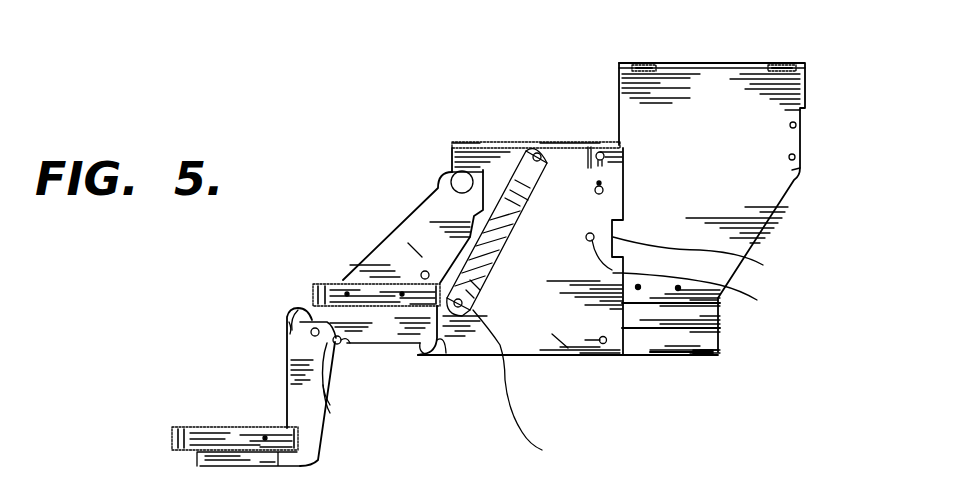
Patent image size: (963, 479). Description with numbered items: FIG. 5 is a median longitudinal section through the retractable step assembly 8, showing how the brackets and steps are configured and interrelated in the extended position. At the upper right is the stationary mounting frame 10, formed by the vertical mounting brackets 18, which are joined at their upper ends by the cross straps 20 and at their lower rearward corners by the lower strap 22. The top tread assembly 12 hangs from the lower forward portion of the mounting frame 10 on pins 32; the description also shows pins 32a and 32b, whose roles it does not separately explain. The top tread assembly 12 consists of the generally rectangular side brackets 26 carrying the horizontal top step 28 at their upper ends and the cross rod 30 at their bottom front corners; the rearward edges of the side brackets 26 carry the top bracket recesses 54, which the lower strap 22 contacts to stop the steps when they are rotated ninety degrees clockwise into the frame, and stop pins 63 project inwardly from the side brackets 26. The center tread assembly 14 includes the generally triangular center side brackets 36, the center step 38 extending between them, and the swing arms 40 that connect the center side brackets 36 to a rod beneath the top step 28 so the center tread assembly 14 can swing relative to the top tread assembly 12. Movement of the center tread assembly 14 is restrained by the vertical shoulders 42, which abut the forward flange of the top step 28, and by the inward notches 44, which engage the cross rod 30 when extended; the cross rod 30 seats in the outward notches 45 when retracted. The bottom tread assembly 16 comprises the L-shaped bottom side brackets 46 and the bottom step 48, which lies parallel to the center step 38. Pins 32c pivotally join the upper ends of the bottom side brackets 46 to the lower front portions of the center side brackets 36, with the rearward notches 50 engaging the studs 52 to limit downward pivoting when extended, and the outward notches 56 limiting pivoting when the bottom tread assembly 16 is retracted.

The step assembly 8 is at (280, 92).
The mounting frame 10 is at (786, 50).
The top tread assembly 12 is at (465, 92).
The center tread assembly 14 is at (345, 226).
The bottom tread assembly 16 is at (166, 354).
The mounting brackets 18 is at (776, 181).
The cross straps 20 is at (640, 64).
The lower strap 22 is at (718, 352).
The side brackets 26 is at (566, 348).
The top step 28 is at (478, 142).
The cross rod 30 is at (436, 350).
The pins 32 is at (545, 142).
The plate portion 32a is at (624, 350).
The plate portion 32b is at (516, 386).
The pins 32c is at (305, 312).
The center side brackets 36 is at (408, 243).
The center step 38 is at (347, 283).
The swing arms 40 is at (503, 250).
The vertical shoulders 42 is at (457, 172).
The inward notches 44 is at (420, 352).
The outward notches 45 is at (290, 330).
The bottom side brackets 46 is at (316, 416).
The bottom step 48 is at (180, 428).
The rearward notches 50 is at (330, 391).
The studs 52 is at (347, 343).
The top bracket recesses 54 is at (763, 265).
The outward notches 56 is at (298, 330).
The pins 63 is at (757, 300).